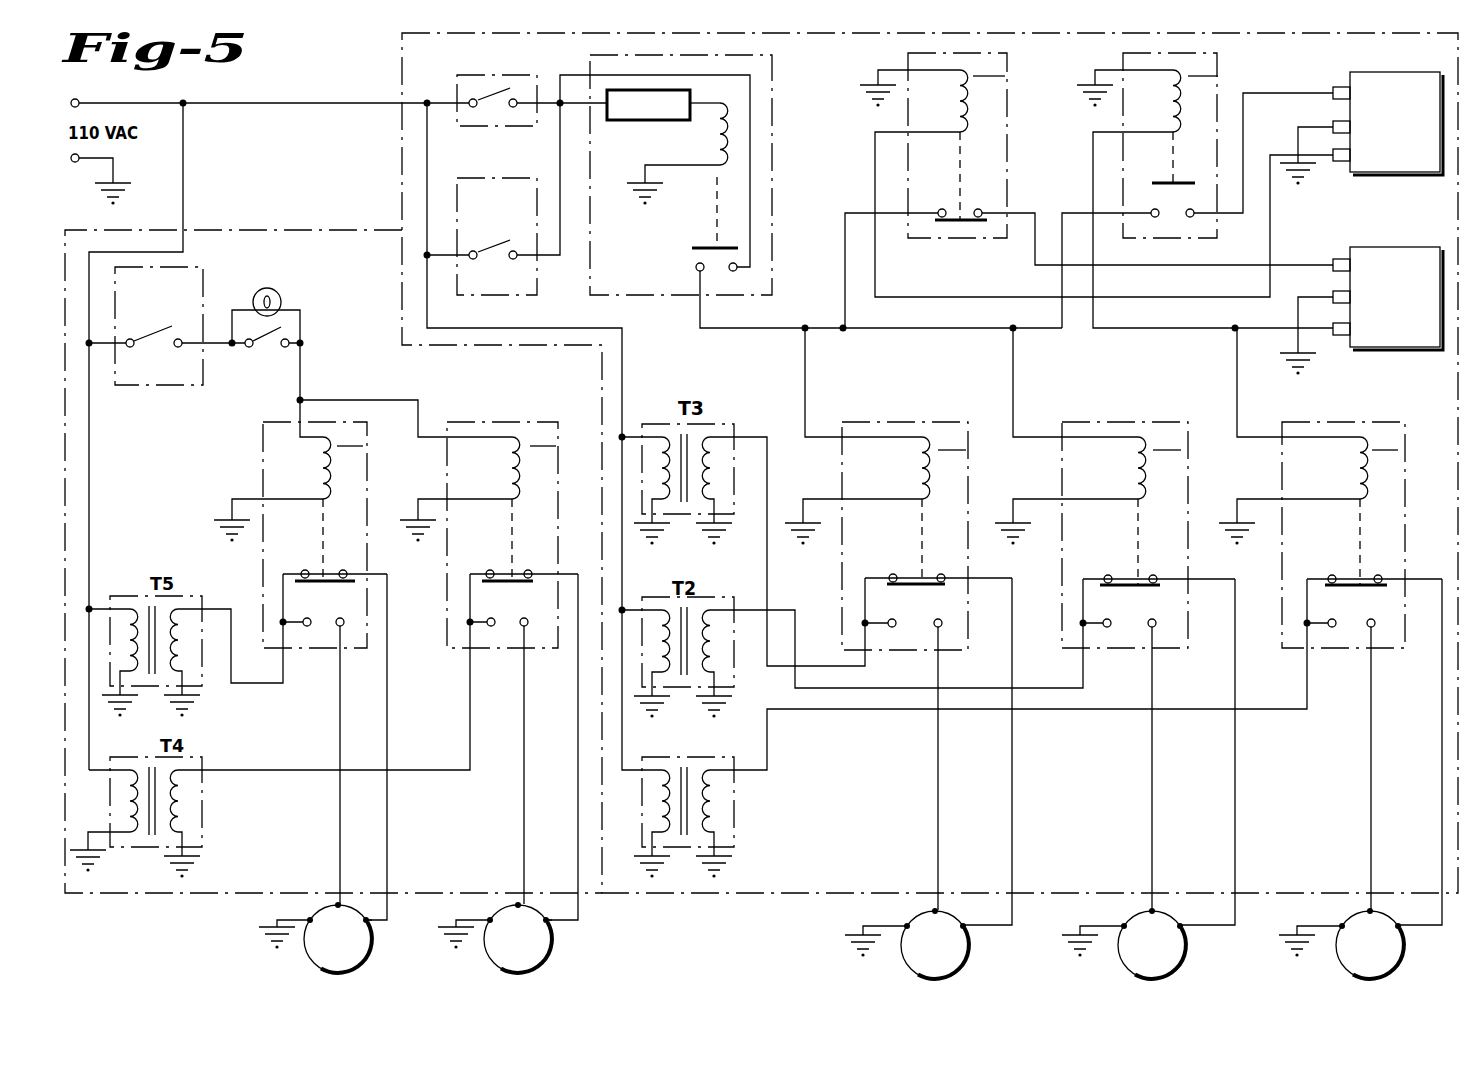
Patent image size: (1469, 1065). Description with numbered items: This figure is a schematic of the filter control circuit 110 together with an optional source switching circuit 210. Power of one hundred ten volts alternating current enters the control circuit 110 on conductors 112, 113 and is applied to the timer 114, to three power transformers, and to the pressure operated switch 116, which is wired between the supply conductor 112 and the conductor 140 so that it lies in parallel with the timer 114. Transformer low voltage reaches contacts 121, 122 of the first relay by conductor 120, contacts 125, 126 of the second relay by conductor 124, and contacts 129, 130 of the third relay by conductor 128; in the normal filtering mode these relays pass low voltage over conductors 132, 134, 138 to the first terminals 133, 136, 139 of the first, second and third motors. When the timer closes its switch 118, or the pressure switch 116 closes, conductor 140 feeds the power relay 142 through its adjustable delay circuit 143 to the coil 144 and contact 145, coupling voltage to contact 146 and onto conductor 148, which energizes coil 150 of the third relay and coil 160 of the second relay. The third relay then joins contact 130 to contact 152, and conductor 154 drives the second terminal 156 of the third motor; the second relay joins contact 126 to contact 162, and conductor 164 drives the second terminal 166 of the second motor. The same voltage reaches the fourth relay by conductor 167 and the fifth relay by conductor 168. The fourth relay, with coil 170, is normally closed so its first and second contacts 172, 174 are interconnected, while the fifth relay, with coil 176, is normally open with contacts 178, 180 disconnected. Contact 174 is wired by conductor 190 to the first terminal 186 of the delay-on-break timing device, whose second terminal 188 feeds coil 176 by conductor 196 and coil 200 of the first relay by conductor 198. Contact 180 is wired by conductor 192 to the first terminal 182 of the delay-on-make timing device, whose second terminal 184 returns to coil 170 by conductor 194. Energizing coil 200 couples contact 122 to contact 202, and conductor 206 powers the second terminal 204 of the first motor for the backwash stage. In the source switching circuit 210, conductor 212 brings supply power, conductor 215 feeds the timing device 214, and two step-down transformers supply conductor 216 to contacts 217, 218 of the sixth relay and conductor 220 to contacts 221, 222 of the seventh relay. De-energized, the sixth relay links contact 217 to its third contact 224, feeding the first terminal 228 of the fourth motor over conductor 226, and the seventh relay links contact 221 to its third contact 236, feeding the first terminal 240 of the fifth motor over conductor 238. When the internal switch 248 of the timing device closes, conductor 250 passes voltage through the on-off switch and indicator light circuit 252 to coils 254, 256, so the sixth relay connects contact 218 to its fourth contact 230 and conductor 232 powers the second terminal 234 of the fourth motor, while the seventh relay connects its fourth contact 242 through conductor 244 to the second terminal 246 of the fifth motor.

The filter control circuit 110 is at (400, 192).
The conductor 112 is at (130, 84).
The conductor 113 is at (113, 158).
The timer 114 is at (523, 172).
The pressure operated switch 116 is at (482, 74).
The switch 118 is at (489, 260).
The conductor 120 is at (755, 776).
The contact 121 is at (1331, 572).
The contact 122 is at (1330, 621).
The conductor 124 is at (788, 676).
The contact 125 is at (1114, 548).
The contact 126 is at (1110, 622).
The conductor 128 is at (768, 455).
The contact 129 is at (906, 550).
The contact 130 is at (899, 598).
The conductor 132 is at (1442, 680).
The first terminal 133 is at (1396, 932).
The conductor 134 is at (1236, 826).
The first terminal 136 is at (1184, 932).
The conductor 138 is at (1012, 828).
The first terminal 139 is at (971, 932).
The conductor 140 is at (548, 255).
The power relay 142 is at (781, 44).
The adjustable delay circuit 143 is at (652, 124).
The coil 144 is at (712, 128).
The contact 145 is at (732, 276).
The contact 146 is at (692, 268).
The conductor 148 is at (696, 301).
The coil 150 is at (919, 475).
The contact 152 is at (936, 630).
The conductor 154 is at (938, 822).
The second terminal 156 is at (933, 910).
The coil 160 is at (1142, 476).
The contact 162 is at (1150, 632).
The conductor 164 is at (1143, 822).
The second terminal 166 is at (1150, 910).
The conductor 167 is at (864, 182).
The conductor 168 is at (1062, 299).
The coil 170 is at (960, 88).
The first contact 172 is at (941, 208).
The second contact 174 is at (981, 208).
The coil 176 is at (1172, 88).
The first contact 178 is at (1153, 206).
The second contact 180 is at (1188, 206).
The first terminal 182 is at (1331, 87).
The second terminal 184 is at (1341, 158).
The first terminal 186 is at (1343, 258).
The second terminal 188 is at (1343, 340).
The conductor 190 is at (1166, 267).
The conductor 192 is at (1276, 85).
The conductor 194 is at (1252, 296).
The conductor 196 is at (1093, 319).
The conductor 198 is at (1234, 338).
The coil 200 is at (1366, 477).
The contact 202 is at (1369, 632).
The second terminal 204 is at (1370, 910).
The conductor 206 is at (1363, 718).
The source switching circuit 210 is at (338, 226).
The conductor 212 is at (199, 130).
The timing device 214 is at (214, 265).
The conductor 215 is at (96, 365).
The conductor 216 is at (274, 742).
The first contact 217 is at (489, 562).
The second contact 218 is at (488, 614).
The conductor 220 is at (246, 684).
The first contact 221 is at (300, 560).
The second contact 222 is at (321, 606).
The third contact 224 is at (529, 569).
The conductor 226 is at (578, 686).
The first terminal 228 is at (570, 928).
The fourth contact 230 is at (521, 628).
The conductor 232 is at (522, 729).
The second terminal 234 is at (517, 904).
The third contact 236 is at (344, 567).
The conductor 238 is at (388, 650).
The first terminal 240 is at (372, 928).
The fourth contact 242 is at (333, 624).
The conductor 244 is at (339, 712).
The second terminal 246 is at (338, 904).
The internal switch 248 is at (156, 348).
The conductor 250 is at (217, 350).
The on-off switch/indicator light circuit 252 is at (285, 304).
The coil 254 is at (509, 460).
The coil 256 is at (322, 468).